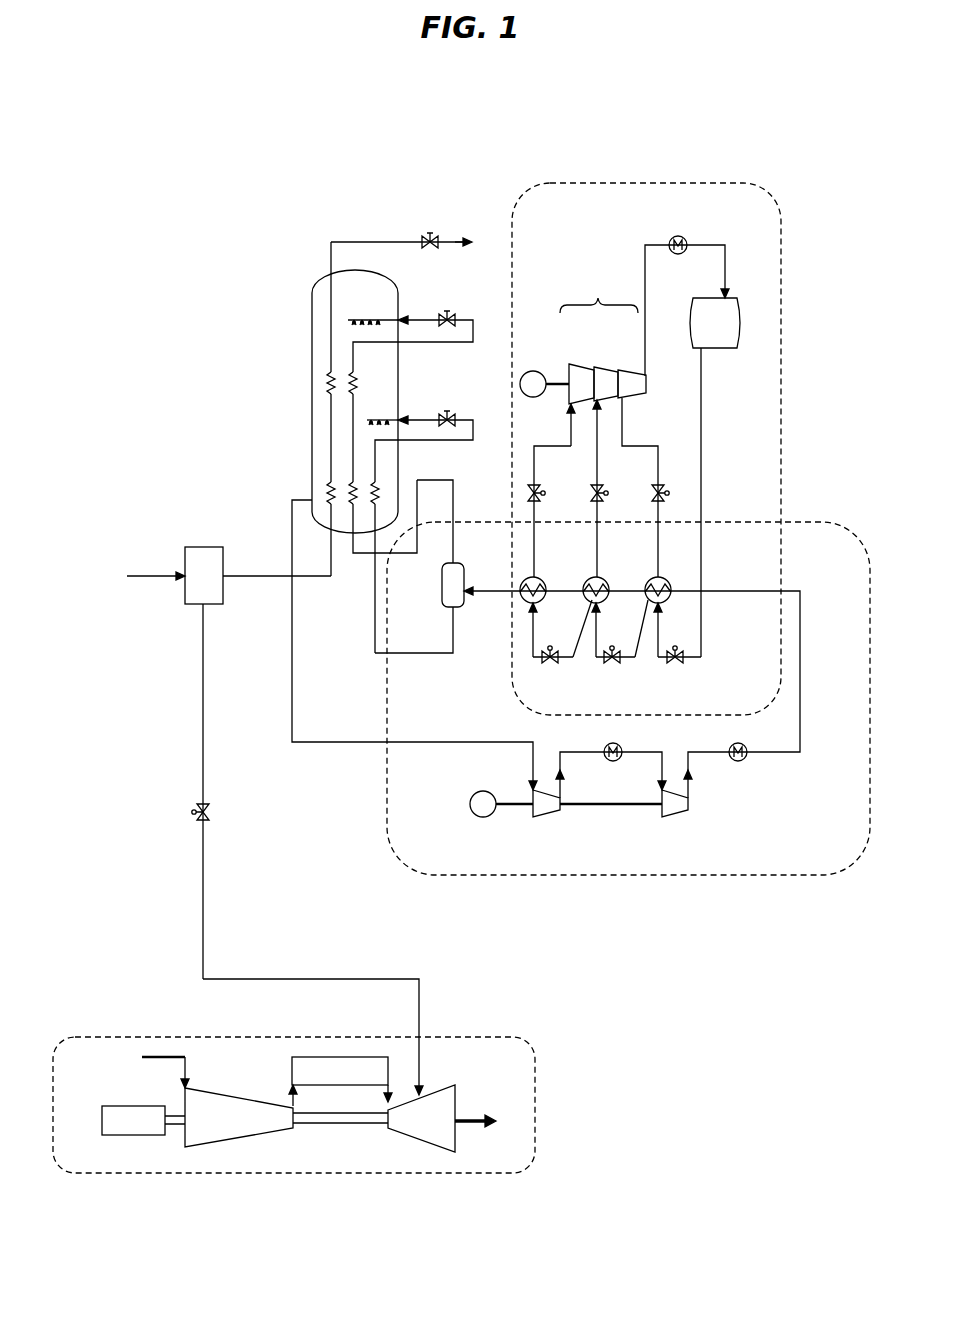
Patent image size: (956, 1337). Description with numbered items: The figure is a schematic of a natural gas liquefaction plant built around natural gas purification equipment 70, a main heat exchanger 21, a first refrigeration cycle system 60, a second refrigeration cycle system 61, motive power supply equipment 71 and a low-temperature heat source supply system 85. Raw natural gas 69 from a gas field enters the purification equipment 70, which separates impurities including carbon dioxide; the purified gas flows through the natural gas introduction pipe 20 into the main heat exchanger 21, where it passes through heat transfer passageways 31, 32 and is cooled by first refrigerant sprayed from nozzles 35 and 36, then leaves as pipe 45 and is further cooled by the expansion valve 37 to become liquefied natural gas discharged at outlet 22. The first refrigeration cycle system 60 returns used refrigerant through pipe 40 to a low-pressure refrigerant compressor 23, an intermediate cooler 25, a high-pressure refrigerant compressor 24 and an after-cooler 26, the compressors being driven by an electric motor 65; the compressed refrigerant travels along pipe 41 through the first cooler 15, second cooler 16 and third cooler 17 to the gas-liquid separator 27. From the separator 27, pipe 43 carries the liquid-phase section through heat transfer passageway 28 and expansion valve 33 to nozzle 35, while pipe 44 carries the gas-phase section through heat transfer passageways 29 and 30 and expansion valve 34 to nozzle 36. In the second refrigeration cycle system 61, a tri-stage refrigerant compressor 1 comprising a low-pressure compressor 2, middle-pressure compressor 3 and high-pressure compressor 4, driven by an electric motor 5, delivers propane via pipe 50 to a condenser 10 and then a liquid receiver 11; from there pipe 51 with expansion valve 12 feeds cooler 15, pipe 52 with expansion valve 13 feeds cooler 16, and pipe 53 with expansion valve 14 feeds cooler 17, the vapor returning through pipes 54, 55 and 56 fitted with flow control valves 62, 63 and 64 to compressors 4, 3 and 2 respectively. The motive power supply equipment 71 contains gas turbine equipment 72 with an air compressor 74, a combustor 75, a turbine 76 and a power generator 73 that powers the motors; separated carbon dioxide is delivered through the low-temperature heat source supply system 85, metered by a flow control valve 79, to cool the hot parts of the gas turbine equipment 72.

The refrigerant compressor 1 is at (600, 340).
The low-pressure compressor 2 is at (579, 363).
The middle-pressure compressor 3 is at (601, 367).
The high-pressure compressor 4 is at (626, 367).
The electric motor 5 is at (531, 397).
The condenser 10 is at (678, 234).
The liquid receiver 11 is at (692, 311).
The expansion valve 12 is at (675, 665).
The expansion valve 13 is at (612, 665).
The expansion valve 14 is at (547, 665).
The first cooler 15 is at (662, 579).
The second cooler 16 is at (601, 579).
The third cooler 17 is at (539, 579).
The natural gas introduction pipe 20 is at (274, 578).
The main heat exchanger 21 is at (312, 330).
The discharge line 22 is at (465, 236).
The low-pressure refrigerant compressor 23 is at (549, 816).
The high-pressure refrigerant compressor 24 is at (678, 816).
The intermediate cooler 25 is at (615, 762).
The after-cooler 26 is at (736, 762).
The gas-liquid separator 27 is at (464, 572).
The heat transfer passageway 28 is at (379, 490).
The heat transfer passageway 29 is at (348, 484).
The heat transfer passageway 30 is at (355, 381).
The heat transfer passageway 31 is at (324, 484).
The heat transfer passageway 32 is at (324, 380).
The expansion valve 33 is at (447, 412).
The expansion valve 34 is at (448, 314).
The nozzle 35 is at (373, 418).
The nozzle 36 is at (366, 318).
The expansion valve 37 is at (430, 232).
The pipe 40 is at (465, 742).
The pipe 41 is at (801, 633).
The pipe 43 is at (414, 655).
The pipe 44 is at (455, 480).
The pipe 45 is at (332, 240).
The pipe 50 is at (645, 262).
The pipe 51 is at (704, 636).
The pipe 52 is at (639, 665).
The pipe 53 is at (576, 665).
The pipe 54 is at (648, 440).
The pipe 55 is at (599, 460).
The pipe 56 is at (536, 460).
The first refrigeration cycle system 60 is at (819, 564).
The second refrigeration cycle system 61 is at (733, 221).
The flow control valve 62 is at (669, 492).
The flow control valve 63 is at (609, 494).
The flow control valve 64 is at (546, 494).
The electric motor 65 is at (468, 804).
The raw natural gas 69 is at (148, 572).
The natural gas purification equipment 70 is at (203, 547).
The motive power supply equipment 71 is at (83, 1083).
The gas turbine equipment 72 is at (456, 1090).
The power generator 73 is at (143, 1120).
The compressor 74 is at (265, 1102).
The combustor 75 is at (340, 1081).
The turbine 76 is at (421, 1118).
The flow control valve 79 is at (204, 803).
The low-temperature heat source supply system 85 is at (291, 979).